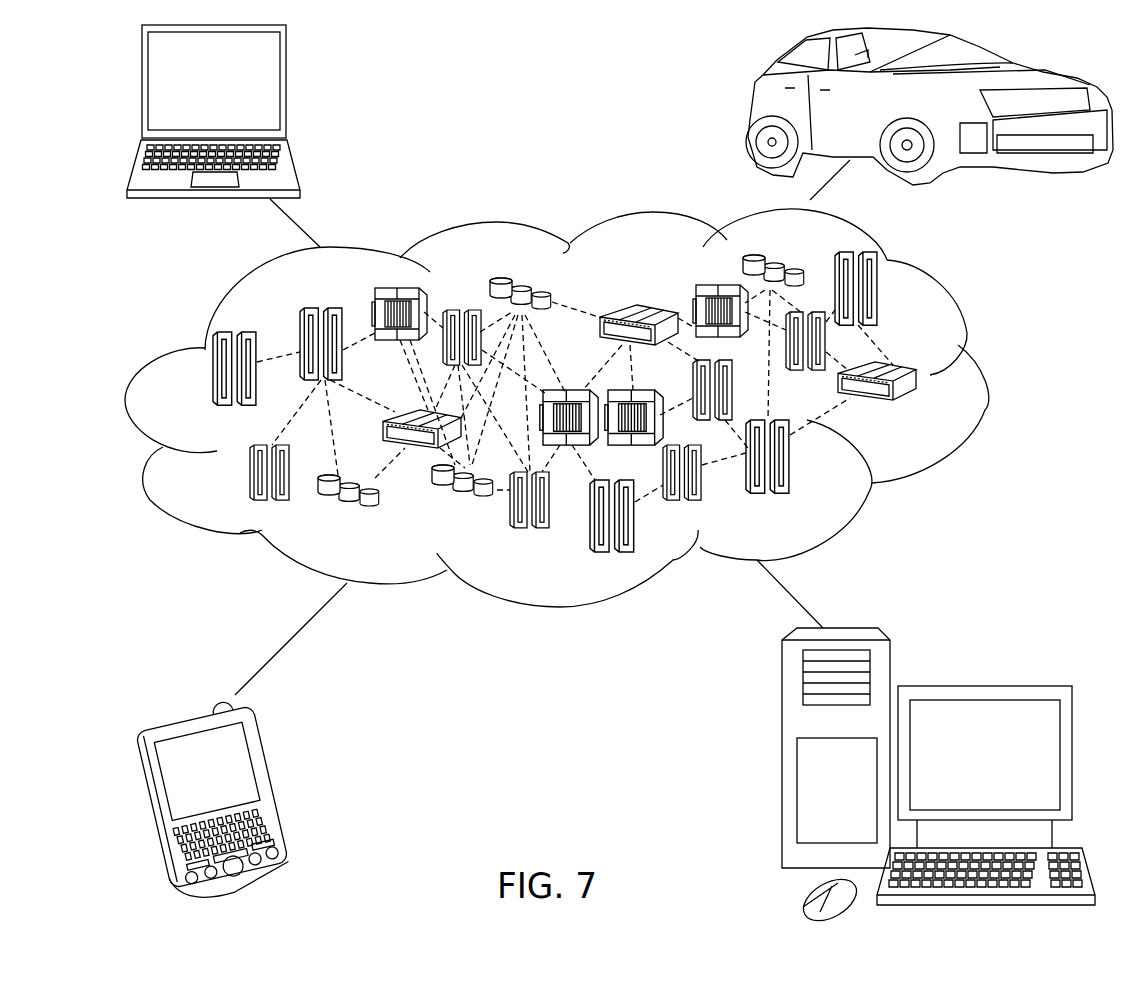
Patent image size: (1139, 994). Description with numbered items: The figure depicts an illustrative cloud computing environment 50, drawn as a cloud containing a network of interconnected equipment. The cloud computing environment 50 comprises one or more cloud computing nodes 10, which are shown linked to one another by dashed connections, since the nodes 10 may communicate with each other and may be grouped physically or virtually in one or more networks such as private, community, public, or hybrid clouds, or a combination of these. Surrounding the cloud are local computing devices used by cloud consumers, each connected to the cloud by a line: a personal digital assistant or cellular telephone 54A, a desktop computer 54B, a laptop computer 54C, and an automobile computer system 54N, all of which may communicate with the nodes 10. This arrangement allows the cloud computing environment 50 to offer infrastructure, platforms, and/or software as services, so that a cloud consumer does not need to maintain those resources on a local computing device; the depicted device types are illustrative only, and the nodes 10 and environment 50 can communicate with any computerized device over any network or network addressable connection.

The cloud computing node 10 is at (936, 417).
The cloud computing environment 50 is at (985, 380).
The personal digital assistant or cellular telephone 54A is at (277, 787).
The desktop computer 54B is at (982, 686).
The laptop computer 54C is at (287, 89).
The automobile computer system 54N is at (748, 107).